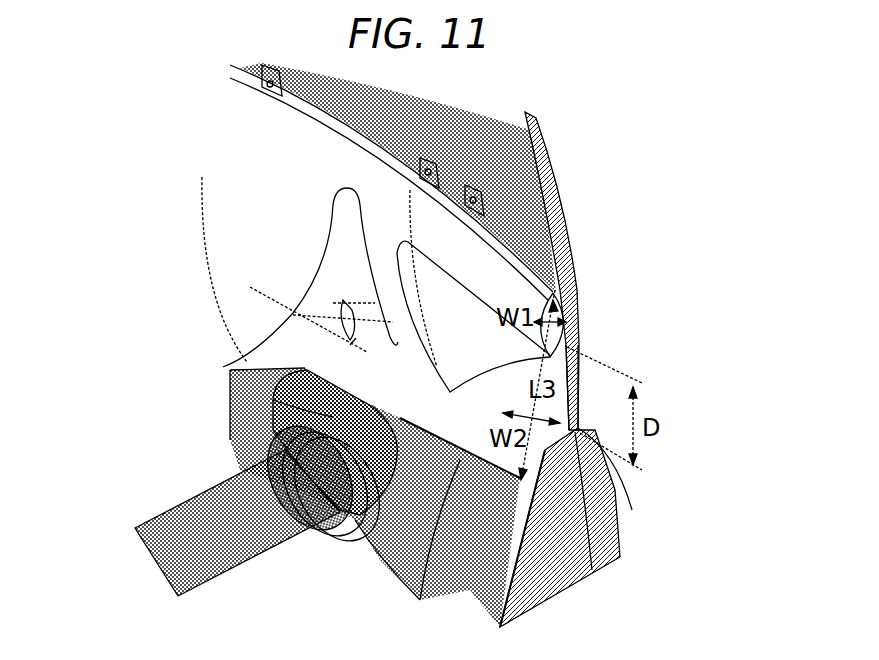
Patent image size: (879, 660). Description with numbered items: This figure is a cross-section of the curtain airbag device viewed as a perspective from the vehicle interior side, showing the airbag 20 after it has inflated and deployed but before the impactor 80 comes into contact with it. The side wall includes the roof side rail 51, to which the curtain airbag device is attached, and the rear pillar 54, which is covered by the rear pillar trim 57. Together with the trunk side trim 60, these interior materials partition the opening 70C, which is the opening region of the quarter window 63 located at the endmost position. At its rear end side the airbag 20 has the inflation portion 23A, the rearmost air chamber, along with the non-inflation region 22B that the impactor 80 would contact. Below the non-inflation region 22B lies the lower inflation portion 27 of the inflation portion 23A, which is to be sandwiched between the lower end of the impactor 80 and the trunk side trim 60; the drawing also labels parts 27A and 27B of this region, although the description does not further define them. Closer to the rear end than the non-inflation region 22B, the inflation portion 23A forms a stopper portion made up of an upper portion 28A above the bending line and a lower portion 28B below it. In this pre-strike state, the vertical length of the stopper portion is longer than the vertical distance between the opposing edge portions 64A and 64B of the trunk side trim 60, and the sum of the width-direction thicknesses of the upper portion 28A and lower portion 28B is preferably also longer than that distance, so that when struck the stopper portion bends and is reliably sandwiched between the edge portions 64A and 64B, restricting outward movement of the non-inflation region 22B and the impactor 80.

The airbag 20 is at (190, 211).
The non-inflation region 22B is at (440, 283).
The inflation portion 23A is at (433, 242).
The lower inflation portion 27 is at (296, 523).
The upper end portion of panel 27A is at (500, 268).
The lower edge of panel 27B is at (450, 470).
The upper portion of the stopper portion 28A is at (565, 318).
The lower portion of the stopper portion 28B is at (585, 540).
The roof side rail 51 is at (335, 108).
The rear pillar 54 is at (295, 315).
The rear pillar trim 57 is at (235, 365).
The trunk side trim 60 is at (393, 503).
The quarter window 63 is at (255, 458).
The edge portion 64A is at (567, 350).
The edge portion 64B is at (632, 510).
The opening 70C is at (540, 128).
The impactor 80 is at (275, 400).